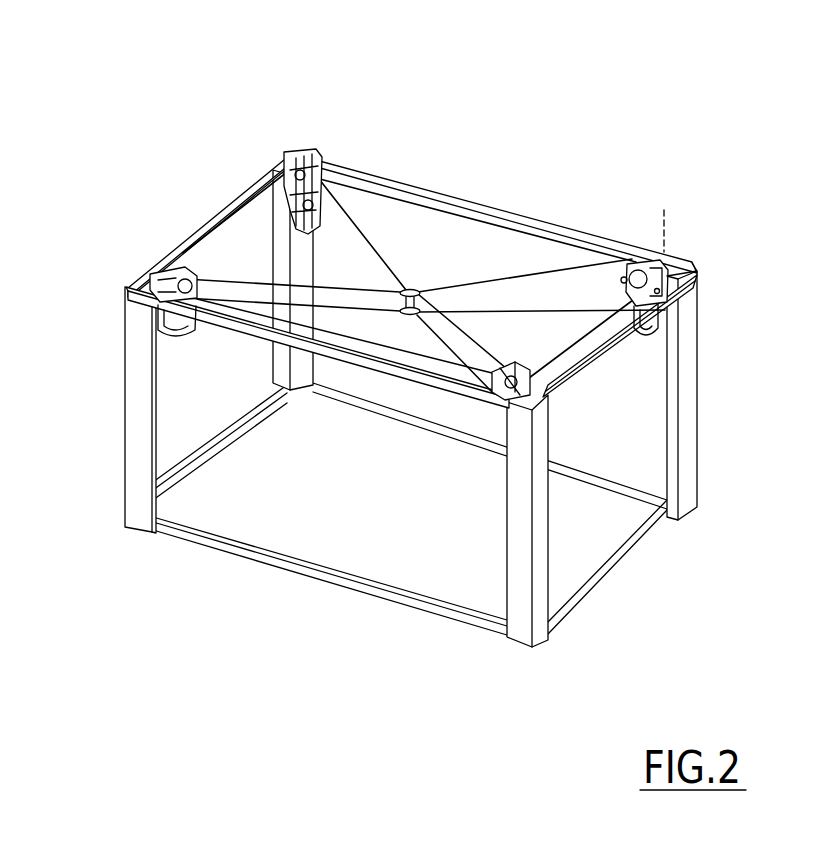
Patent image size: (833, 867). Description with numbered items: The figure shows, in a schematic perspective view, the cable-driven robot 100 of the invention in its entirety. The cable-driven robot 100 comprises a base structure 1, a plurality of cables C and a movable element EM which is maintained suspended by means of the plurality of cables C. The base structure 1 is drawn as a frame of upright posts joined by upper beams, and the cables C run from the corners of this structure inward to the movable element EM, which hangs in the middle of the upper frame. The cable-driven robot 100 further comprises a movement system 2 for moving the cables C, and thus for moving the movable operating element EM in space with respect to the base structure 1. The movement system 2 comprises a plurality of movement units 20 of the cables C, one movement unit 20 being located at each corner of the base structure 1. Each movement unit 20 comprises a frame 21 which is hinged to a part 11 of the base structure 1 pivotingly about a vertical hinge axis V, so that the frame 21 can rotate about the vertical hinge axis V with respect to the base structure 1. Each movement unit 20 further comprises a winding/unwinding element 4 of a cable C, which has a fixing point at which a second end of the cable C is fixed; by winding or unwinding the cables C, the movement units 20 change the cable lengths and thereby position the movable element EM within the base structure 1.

The cable-driven robot 100 is at (690, 198).
The base structure 1 is at (692, 442).
The movement system 2 is at (320, 148).
The movement unit 20 is at (285, 165).
The part of the base structure 11 is at (668, 265).
The frame 21 is at (660, 291).
The winding/unwinding element 4 is at (621, 280).
The movable element EM is at (410, 288).
The cables C is at (243, 277).
The vertical hinge axis V is at (658, 218).